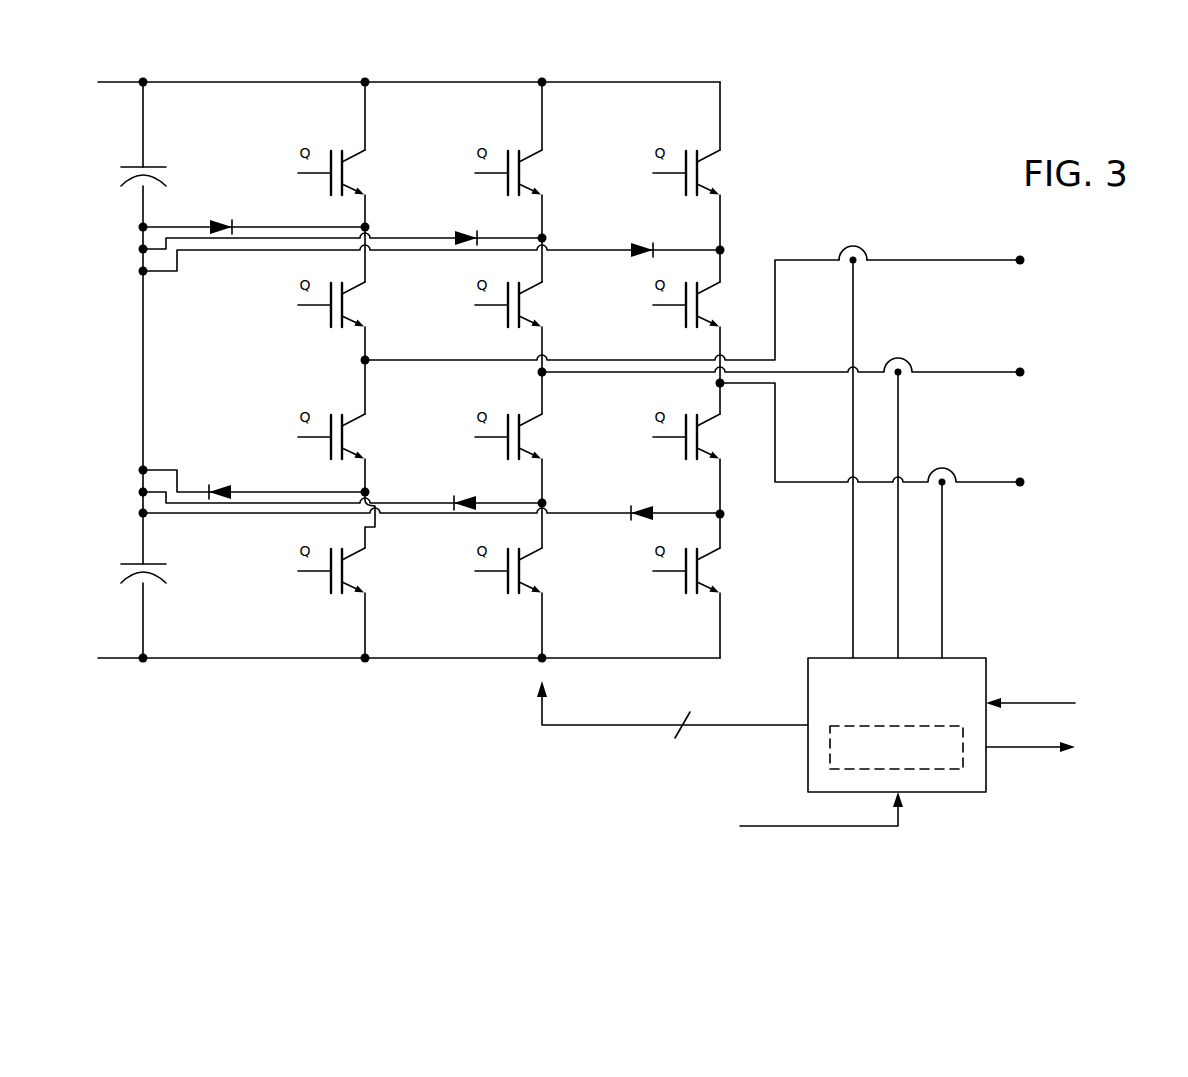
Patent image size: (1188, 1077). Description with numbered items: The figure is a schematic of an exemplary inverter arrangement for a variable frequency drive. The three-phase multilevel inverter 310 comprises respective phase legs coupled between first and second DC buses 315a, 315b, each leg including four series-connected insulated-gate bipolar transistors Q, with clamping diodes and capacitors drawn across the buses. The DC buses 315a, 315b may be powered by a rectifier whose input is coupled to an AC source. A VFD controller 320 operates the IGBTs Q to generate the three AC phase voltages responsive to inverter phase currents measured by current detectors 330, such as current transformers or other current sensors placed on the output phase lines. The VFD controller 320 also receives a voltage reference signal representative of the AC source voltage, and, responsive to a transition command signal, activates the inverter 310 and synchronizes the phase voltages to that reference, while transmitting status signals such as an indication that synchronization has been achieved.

The three-phase multilevel inverter 310 is at (784, 121).
The first DC bus 315a is at (410, 82).
The second DC bus 315b is at (408, 658).
The VFD controller 320 is at (965, 658).
The current detectors 330 is at (854, 226).